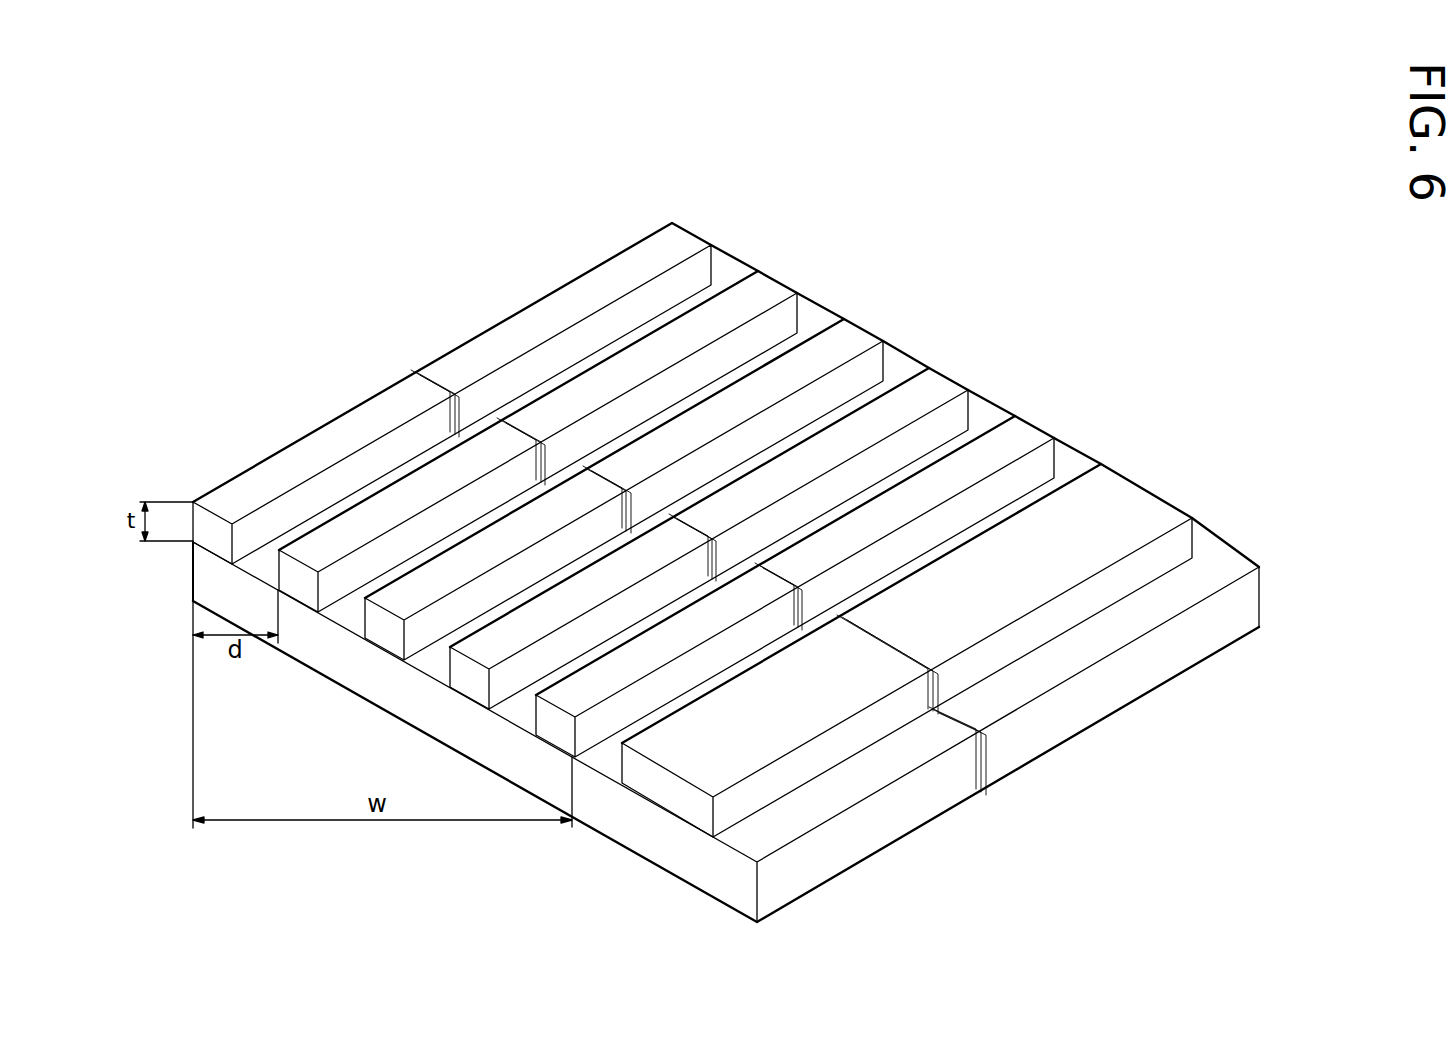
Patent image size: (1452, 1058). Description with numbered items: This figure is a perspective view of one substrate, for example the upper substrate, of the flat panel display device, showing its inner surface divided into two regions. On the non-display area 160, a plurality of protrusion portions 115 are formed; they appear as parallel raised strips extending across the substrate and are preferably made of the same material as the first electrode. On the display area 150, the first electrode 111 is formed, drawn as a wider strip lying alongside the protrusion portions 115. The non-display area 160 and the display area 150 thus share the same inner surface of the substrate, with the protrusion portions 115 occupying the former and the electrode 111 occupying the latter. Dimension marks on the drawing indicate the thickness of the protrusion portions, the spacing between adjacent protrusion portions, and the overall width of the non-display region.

The display area 150 is at (1193, 403).
The non-display area 160 is at (726, 497).
The protrusion portions 115 is at (679, 241).
The first electrode 111 is at (940, 632).